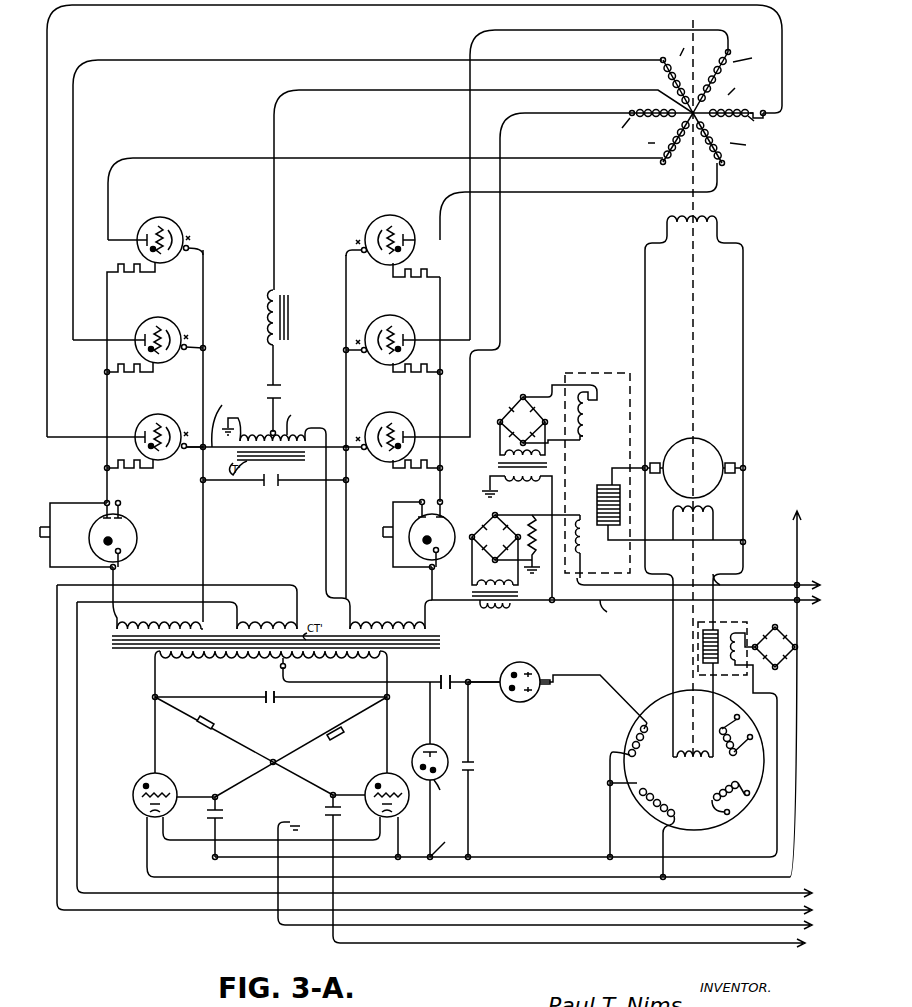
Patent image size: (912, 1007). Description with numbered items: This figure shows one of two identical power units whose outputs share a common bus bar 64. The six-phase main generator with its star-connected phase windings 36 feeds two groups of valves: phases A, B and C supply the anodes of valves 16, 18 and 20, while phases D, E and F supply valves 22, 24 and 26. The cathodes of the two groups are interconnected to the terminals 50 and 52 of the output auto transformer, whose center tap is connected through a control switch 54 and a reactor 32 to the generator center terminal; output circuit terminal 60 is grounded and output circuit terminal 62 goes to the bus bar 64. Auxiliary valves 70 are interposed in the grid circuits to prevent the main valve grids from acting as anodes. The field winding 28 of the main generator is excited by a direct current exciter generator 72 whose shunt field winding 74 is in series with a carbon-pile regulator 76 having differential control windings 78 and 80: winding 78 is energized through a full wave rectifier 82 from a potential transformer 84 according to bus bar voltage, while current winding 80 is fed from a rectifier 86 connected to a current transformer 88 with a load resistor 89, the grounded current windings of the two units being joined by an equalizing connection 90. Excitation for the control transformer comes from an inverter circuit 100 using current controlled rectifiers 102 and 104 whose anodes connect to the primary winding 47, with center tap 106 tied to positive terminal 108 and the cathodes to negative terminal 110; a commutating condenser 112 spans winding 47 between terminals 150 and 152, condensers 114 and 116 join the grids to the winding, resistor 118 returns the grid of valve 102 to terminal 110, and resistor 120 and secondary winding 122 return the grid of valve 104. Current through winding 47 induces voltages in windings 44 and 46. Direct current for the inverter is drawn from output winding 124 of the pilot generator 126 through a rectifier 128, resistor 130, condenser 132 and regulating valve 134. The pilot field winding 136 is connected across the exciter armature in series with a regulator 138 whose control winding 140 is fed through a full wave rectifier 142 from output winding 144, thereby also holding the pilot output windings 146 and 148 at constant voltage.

The valve 16 is at (178, 224).
The valve 18 is at (160, 318).
The valve 20 is at (160, 415).
The valve 22 is at (404, 220).
The valve 24 is at (398, 319).
The valve 26 is at (396, 416).
The field winding 28 is at (715, 216).
The reactor 32 is at (289, 298).
The star-connected winding 36 is at (688, 116).
The winding 44 is at (145, 622).
The winding 46 is at (385, 621).
The primary winding 47 is at (236, 664).
The terminal 50 is at (220, 419).
The terminal 52 is at (330, 447).
The control switch 54 is at (282, 386).
The output circuit terminal 60 is at (262, 436).
The output circuit terminal 62 is at (292, 417).
The bus bar 64 is at (800, 557).
The auxiliary valve 70 is at (134, 530).
The exciter generator 72 is at (706, 442).
The shunt field winding 74 is at (700, 514).
The regulator 76 is at (592, 485).
The control winding 78 is at (586, 420).
The current winding 80 is at (583, 552).
The full wave rectifier 82 is at (523, 396).
The potential transformer 84 is at (512, 480).
The rectifier 86 is at (493, 515).
The current transformer 88 is at (510, 605).
The resistor 89 is at (532, 514).
The equalizing connection 90 is at (735, 584).
The inverter circuit 100 is at (284, 742).
The current controlled rectifier 102 is at (176, 786).
The current controlled rectifier 104 is at (378, 778).
The center tap 106 is at (298, 667).
The positive terminal 108 is at (446, 674).
The negative terminal 110 is at (446, 843).
The commutating condenser 112 is at (280, 701).
The commutating condenser 114 is at (212, 730).
The commutating condenser 116 is at (338, 733).
The resistor 118 is at (224, 814).
The resistor 120 is at (324, 812).
The secondary winding 122 is at (247, 620).
The output winding 124 is at (630, 736).
The pilot generator 126 is at (690, 788).
The rectifier 128 is at (532, 668).
The resistor 130 is at (468, 680).
The condenser 132 is at (476, 766).
The regulating valve 134 is at (448, 793).
The field winding 136 is at (676, 756).
The regulator 138 is at (702, 645).
The control winding 140 is at (742, 623).
The full wave rectifier 142 is at (788, 638).
The output winding 144 is at (648, 818).
The pilot output winding 146 is at (736, 743).
The pilot output winding 148 is at (715, 804).
The terminal 150 is at (158, 695).
The terminal 152 is at (389, 705).